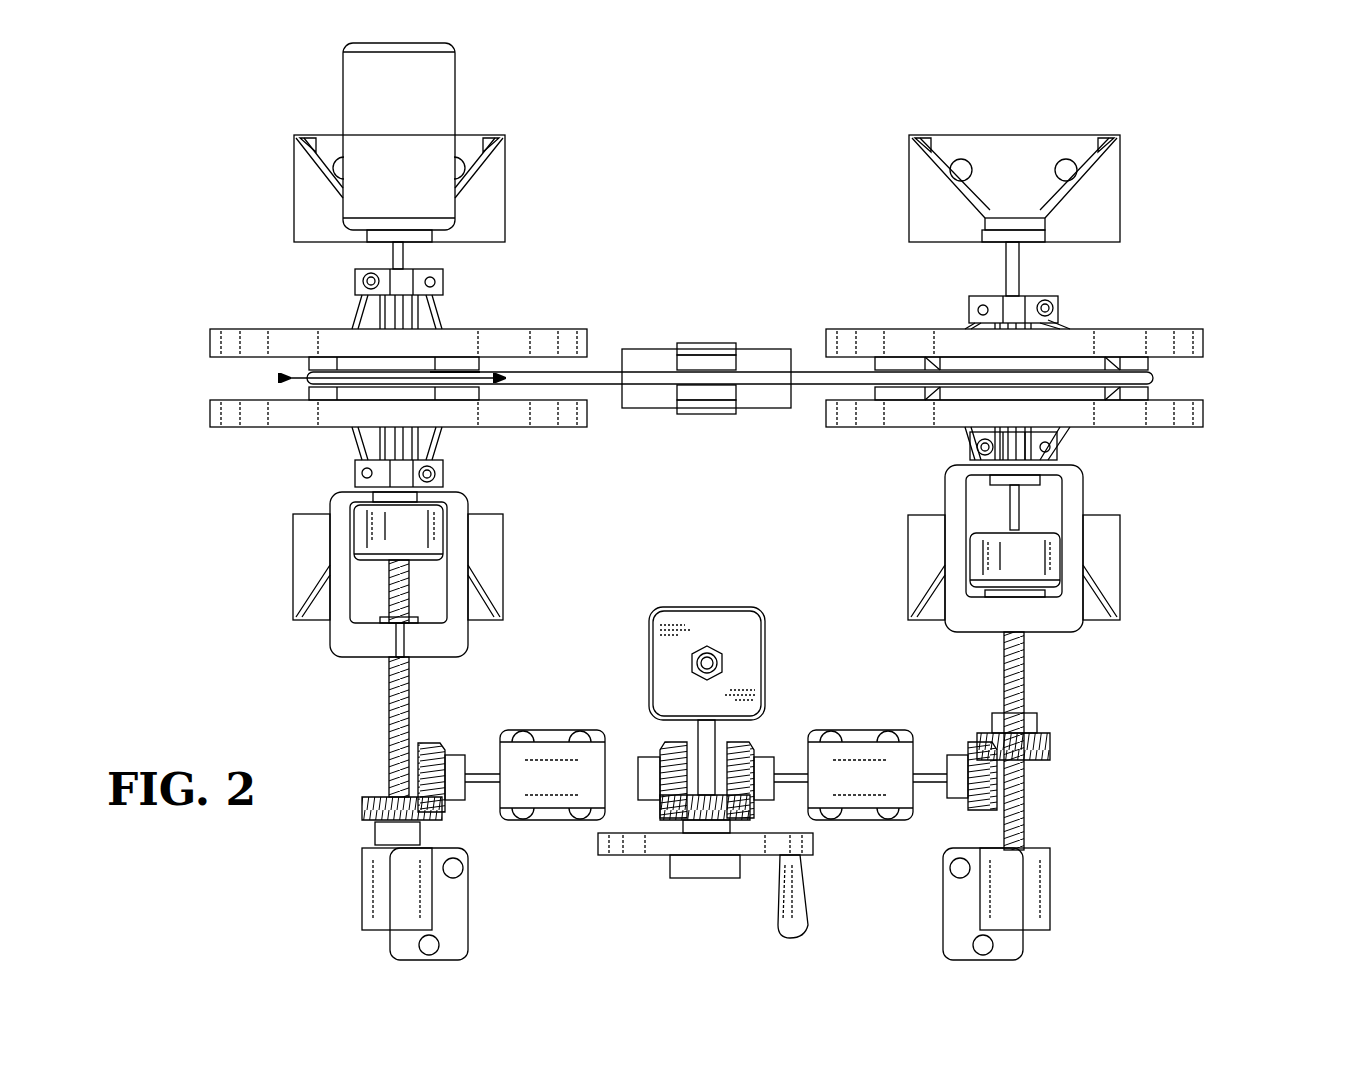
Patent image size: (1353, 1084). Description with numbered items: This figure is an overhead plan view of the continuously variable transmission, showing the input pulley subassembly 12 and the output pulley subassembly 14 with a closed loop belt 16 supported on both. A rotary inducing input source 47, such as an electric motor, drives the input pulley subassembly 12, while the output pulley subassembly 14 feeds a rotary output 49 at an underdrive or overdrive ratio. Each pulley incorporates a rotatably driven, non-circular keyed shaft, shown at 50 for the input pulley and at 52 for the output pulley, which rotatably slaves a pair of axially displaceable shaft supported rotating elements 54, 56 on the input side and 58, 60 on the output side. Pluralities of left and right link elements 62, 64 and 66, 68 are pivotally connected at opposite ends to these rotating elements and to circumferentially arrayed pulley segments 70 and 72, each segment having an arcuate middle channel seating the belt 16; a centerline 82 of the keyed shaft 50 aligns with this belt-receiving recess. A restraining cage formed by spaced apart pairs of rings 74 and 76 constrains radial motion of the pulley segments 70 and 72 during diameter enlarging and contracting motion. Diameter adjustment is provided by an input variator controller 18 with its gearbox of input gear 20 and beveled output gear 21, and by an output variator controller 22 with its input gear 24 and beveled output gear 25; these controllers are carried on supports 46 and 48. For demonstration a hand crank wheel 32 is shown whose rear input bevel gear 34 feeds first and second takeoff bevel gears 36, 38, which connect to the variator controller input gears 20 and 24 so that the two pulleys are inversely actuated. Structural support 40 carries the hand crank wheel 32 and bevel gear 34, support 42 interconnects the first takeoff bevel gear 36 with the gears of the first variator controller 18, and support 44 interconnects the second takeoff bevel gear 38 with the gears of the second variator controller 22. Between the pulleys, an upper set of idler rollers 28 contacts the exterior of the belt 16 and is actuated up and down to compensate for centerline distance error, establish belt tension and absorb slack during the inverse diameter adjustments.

The input pulley subassembly 12 is at (222, 293).
The output pulley subassembly 14 is at (862, 293).
The belt 16 is at (598, 372).
The input pulley variator/controller 18 is at (362, 550).
The input gear 20 is at (430, 745).
The beveled output gear 21 is at (363, 800).
The output pulley variator/controller 22 is at (975, 568).
The input gear 24 is at (990, 800).
The beveled output gear 25 is at (1045, 745).
The rollers 28 is at (700, 398).
The hand crank wheel 32 is at (655, 845).
The input bevel gear 34 is at (710, 800).
The first takeoff bevel gear 36 is at (680, 745).
The second takeoff bevel gear 38 is at (735, 745).
The structural support 40 is at (715, 620).
The structural support 42 is at (542, 790).
The structural support 44 is at (850, 795).
The support 46 is at (328, 630).
The rotary inducing input source 47 is at (362, 105).
The support 48 is at (960, 620).
The rotary output 49 is at (915, 172).
The shaft 50 is at (380, 285).
The shaft 52 is at (1018, 290).
The shaft supported rotating element 54 is at (445, 285).
The shaft supported rotating element 56 is at (443, 472).
The shaft supported rotating element 58 is at (972, 312).
The shaft supported rotating element 60 is at (968, 448).
The link elements 62 is at (365, 322).
The link elements 64 is at (365, 447).
The link elements 66 is at (1062, 318).
The link elements 68 is at (1050, 442).
The pulley segments 70 is at (470, 398).
The pulley segments 72 is at (1155, 362).
The rings 74 is at (210, 414).
The rings 76 is at (1205, 414).
The centerline 82 is at (440, 378).